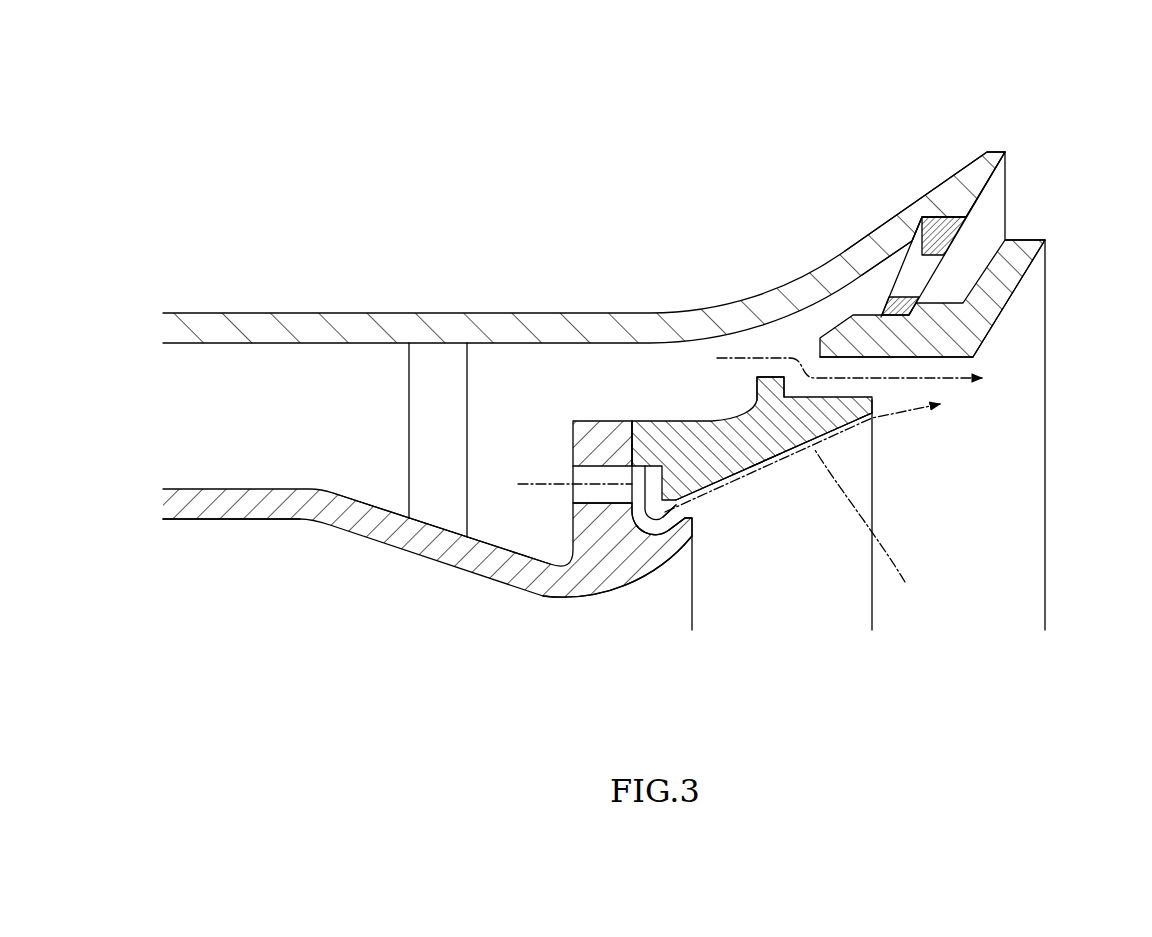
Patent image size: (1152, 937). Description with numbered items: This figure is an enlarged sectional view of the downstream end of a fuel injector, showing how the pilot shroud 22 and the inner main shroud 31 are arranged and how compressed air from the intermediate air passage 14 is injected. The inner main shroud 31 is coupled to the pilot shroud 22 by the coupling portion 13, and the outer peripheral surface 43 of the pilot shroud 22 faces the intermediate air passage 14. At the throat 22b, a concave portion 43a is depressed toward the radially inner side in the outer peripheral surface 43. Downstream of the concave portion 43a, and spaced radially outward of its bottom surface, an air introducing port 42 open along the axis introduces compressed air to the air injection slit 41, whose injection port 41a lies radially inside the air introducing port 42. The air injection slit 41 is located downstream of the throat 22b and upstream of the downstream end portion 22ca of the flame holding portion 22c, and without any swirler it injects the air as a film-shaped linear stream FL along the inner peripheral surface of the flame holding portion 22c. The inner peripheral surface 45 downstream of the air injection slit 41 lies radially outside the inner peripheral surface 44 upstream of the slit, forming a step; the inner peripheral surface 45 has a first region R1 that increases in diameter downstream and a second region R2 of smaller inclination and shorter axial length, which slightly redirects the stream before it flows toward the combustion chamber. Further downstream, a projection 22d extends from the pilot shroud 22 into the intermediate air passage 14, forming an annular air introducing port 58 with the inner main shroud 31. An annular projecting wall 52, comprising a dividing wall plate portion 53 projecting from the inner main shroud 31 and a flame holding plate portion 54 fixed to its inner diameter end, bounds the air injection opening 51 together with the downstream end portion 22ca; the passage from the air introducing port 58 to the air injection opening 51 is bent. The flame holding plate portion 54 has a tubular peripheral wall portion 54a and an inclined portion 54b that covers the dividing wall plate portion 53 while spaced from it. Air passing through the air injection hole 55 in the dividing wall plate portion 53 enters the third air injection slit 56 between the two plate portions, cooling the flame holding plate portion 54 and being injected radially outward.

The coupling portion 13 is at (408, 372).
The intermediate air passage 14 is at (498, 397).
The pilot shroud 22 is at (227, 519).
The throat 22b is at (563, 600).
The flame holding portion 22c is at (717, 418).
The downstream end portion 22ca is at (880, 413).
The projection 22d is at (768, 376).
The inner main shroud 31 is at (286, 312).
The air injection slit 41 is at (675, 492).
The injection port 41a is at (694, 514).
The air introducing port 42 is at (597, 474).
The outer peripheral surface 43 is at (367, 505).
The concave portion 43a is at (512, 545).
The inner peripheral surface 44 is at (675, 559).
The inner peripheral surface 45 is at (810, 440).
The air injection opening 51 is at (855, 372).
The annular projecting wall 52 is at (933, 75).
The dividing wall plate portion 53 is at (943, 200).
The flame holding plate portion 54 is at (1025, 237).
The peripheral wall portion 54a is at (997, 359).
The inclined portion 54b is at (1010, 292).
The air injection hole 55 is at (917, 277).
The third air injection slit 56 is at (967, 263).
The air introducing port 58 is at (780, 342).
The first region R1 is at (765, 458).
The second region R2 is at (875, 414).
The film-shaped linear stream FL is at (870, 533).